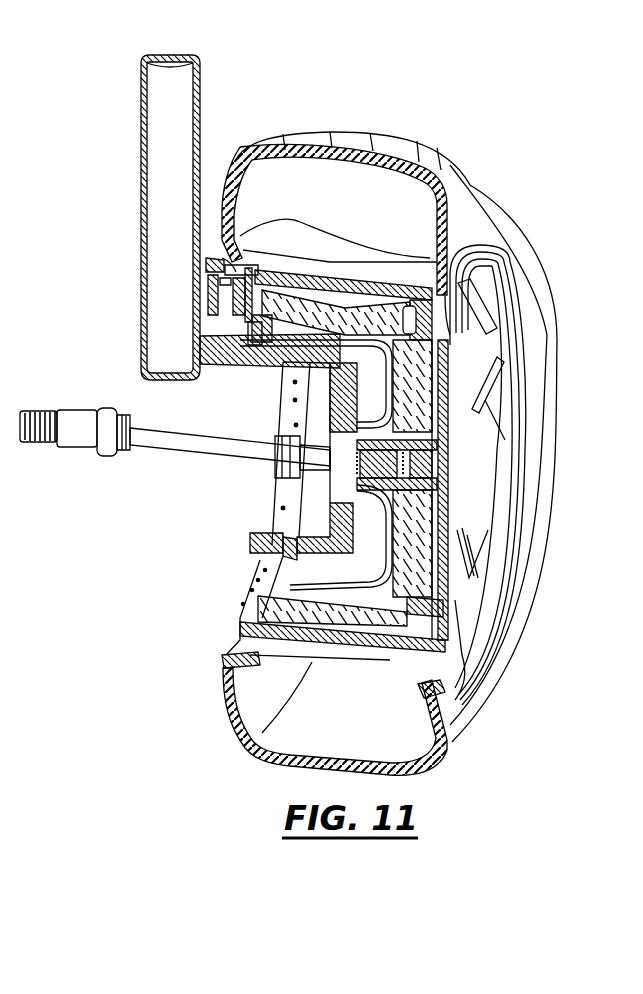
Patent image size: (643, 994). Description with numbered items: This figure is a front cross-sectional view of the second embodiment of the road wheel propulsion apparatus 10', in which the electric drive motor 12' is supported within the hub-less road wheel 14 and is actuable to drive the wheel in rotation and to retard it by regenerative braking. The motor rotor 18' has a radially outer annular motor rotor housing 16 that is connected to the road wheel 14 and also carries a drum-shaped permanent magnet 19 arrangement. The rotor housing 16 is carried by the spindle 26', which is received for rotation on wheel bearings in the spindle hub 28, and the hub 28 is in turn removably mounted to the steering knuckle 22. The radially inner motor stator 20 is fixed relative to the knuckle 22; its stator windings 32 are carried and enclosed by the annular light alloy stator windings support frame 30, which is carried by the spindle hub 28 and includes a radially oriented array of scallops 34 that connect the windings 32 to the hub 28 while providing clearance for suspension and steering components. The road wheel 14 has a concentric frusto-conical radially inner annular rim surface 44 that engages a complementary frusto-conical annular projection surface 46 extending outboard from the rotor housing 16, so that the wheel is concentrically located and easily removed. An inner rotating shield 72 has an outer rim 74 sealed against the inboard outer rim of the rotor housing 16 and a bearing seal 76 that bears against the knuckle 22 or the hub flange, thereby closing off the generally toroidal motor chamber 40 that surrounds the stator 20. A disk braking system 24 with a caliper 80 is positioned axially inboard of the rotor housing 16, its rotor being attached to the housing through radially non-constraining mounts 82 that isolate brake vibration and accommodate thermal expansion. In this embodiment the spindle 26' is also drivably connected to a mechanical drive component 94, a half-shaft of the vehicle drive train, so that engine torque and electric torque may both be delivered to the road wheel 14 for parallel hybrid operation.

The road wheel propulsion apparatus 10' is at (407, 419).
The electric drive motor 12' is at (490, 538).
The road wheel 14 is at (528, 413).
The motor rotor housing 16 is at (482, 450).
The motor rotor 18' is at (524, 359).
The drum-shaped permanent magnet 19 is at (297, 272).
The motor stator 20 is at (332, 300).
The steering knuckle 22 is at (340, 400).
The disk braking system 24 is at (204, 270).
The spindle 26' is at (259, 512).
The spindle hub 28 is at (440, 415).
The stator windings support frame 30 is at (408, 306).
The stator windings 32 is at (367, 320).
The scallop 34 is at (464, 356).
The motor chamber 40 is at (448, 278).
The radially inner annular rim surface 44 is at (480, 237).
The annular projection surface 46 is at (418, 603).
The inner rotating shield 72 is at (307, 578).
The outer rim 74 is at (251, 268).
The bearing seal 76 is at (356, 420).
The caliper 80 is at (206, 320).
The non-constraining mount 82 is at (213, 256).
The mechanical drive component 94 is at (196, 440).